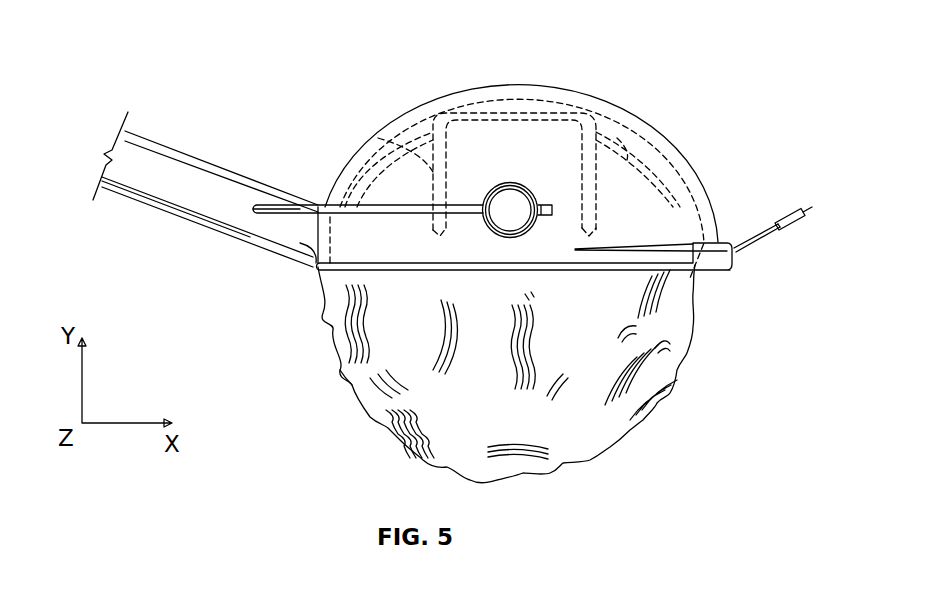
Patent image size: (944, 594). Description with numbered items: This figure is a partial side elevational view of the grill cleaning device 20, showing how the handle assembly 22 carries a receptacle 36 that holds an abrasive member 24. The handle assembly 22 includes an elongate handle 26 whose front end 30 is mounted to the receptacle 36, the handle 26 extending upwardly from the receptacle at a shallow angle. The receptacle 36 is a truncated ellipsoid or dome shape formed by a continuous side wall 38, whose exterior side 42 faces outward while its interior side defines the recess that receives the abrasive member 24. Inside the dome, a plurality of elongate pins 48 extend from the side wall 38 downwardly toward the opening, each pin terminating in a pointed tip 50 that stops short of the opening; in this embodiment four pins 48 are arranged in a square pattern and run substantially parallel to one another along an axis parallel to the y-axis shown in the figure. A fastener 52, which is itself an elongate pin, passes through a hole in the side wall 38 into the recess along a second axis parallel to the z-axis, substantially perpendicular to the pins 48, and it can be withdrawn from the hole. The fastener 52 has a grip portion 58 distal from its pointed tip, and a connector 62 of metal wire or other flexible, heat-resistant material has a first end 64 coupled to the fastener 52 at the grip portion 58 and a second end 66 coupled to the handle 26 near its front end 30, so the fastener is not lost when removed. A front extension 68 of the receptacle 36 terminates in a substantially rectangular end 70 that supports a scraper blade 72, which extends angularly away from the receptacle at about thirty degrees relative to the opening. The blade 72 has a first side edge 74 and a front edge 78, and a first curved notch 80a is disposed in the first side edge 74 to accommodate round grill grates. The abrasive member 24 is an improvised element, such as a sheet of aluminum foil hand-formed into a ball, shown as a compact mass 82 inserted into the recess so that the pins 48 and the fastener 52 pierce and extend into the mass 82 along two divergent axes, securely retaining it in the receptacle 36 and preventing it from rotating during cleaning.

The grill cleaning device 20 is at (400, 79).
The handle assembly 22 is at (160, 134).
The abrasive member 24 is at (650, 430).
The handle 26 is at (165, 191).
The front end 30 is at (290, 254).
The receptacle 36 is at (536, 87).
The side wall 38 is at (662, 166).
The exterior side 42 is at (521, 152).
The pins 48 is at (392, 153).
The pointed tip 50 is at (430, 226).
The fastener 52 is at (528, 175).
The grip portion 58 is at (510, 198).
The connector 62 is at (318, 205).
The first end 64 is at (541, 218).
The second end 66 is at (256, 222).
The front extension 68 is at (723, 243).
The rectangular end 70 is at (735, 259).
The scraper blade 72 is at (787, 224).
The first side edge 74 is at (750, 243).
The front edge 78 is at (812, 207).
The first curved notch 80a is at (781, 212).
The compact mass 82 is at (356, 370).